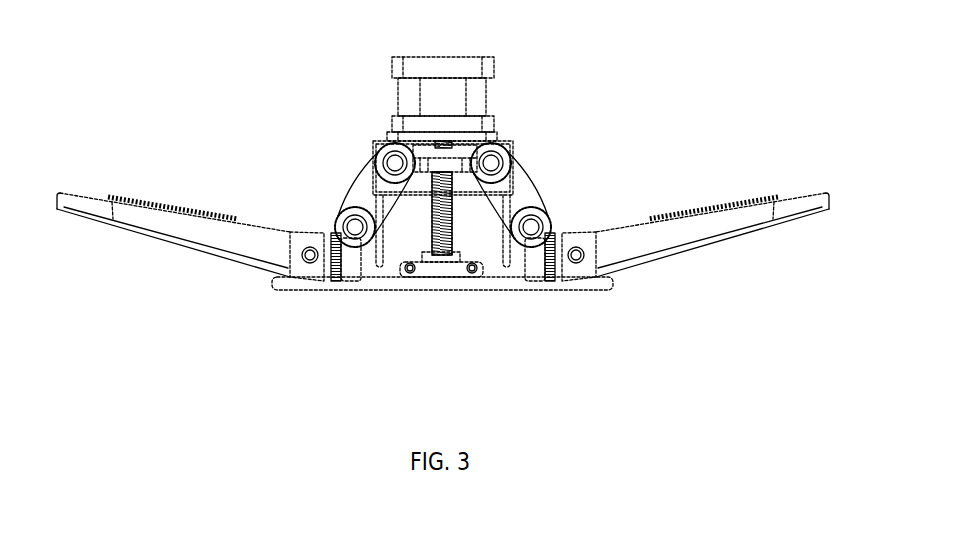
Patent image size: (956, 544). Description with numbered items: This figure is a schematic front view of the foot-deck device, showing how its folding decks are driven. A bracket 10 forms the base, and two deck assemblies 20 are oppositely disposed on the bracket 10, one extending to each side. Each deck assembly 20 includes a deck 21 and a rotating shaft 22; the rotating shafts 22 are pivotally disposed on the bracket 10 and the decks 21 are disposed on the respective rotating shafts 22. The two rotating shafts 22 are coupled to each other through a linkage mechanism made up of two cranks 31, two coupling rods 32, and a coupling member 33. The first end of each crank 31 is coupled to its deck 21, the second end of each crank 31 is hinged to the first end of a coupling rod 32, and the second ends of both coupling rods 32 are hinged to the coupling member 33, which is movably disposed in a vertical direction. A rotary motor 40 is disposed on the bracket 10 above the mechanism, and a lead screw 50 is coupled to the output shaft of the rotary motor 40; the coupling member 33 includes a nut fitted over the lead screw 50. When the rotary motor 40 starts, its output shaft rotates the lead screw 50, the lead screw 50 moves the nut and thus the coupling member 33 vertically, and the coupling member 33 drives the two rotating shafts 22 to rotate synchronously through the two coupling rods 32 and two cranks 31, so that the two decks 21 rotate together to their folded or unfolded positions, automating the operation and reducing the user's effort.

The bracket 10 is at (515, 183).
The deck assembly 20 is at (443, 293).
The deck 21 is at (217, 238).
The rotating shaft 22 is at (310, 263).
The crank 31 is at (547, 267).
The coupling rod 32 is at (389, 197).
The coupling member 33 is at (440, 158).
The rotary motor 40 is at (449, 70).
The lead screw 50 is at (442, 253).